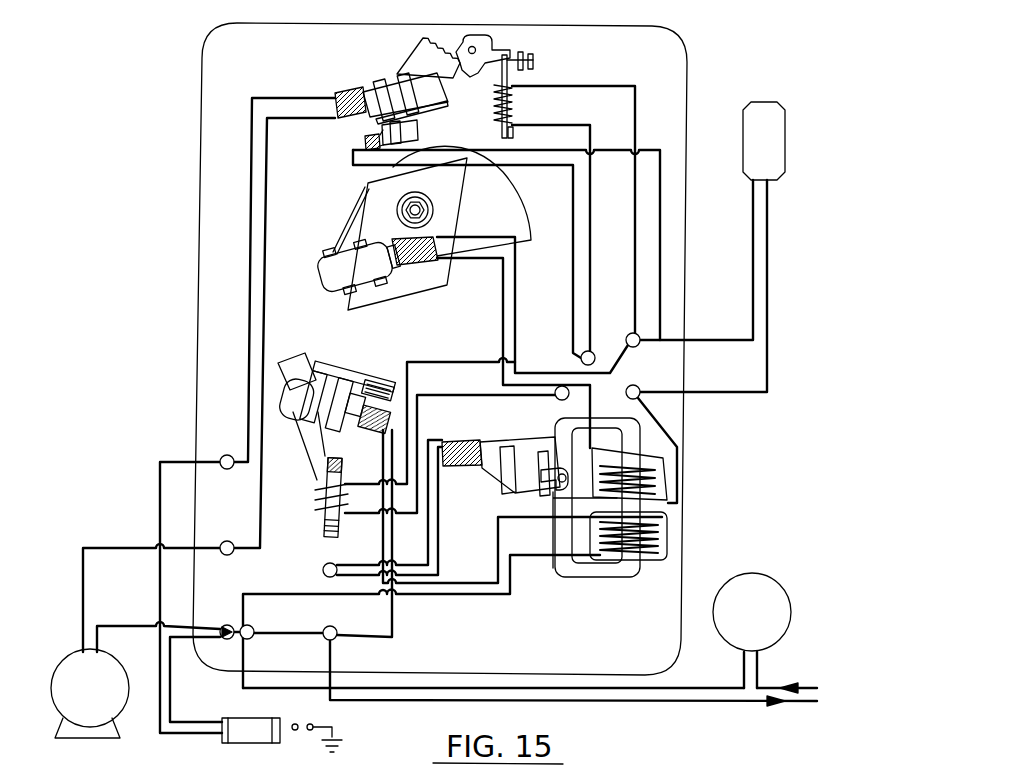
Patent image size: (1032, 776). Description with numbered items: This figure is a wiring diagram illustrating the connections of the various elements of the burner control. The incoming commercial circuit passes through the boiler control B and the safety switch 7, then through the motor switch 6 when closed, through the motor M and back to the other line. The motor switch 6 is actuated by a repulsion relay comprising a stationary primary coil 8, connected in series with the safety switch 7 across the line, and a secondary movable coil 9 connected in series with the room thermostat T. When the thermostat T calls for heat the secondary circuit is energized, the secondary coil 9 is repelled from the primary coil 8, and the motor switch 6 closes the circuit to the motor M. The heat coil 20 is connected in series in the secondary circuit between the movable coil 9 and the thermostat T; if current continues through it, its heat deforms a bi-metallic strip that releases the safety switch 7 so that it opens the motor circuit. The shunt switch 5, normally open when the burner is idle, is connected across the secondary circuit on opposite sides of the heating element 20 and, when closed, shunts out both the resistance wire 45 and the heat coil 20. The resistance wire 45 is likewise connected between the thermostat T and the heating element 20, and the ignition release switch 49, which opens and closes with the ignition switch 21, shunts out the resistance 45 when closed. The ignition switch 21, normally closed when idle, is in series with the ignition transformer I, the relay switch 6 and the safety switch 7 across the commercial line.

The ignition switch 21 is at (343, 93).
The ignition release switch 49 is at (420, 131).
The resistance wire 45 is at (510, 105).
The shunt switch 5 is at (330, 271).
The safety switch 7 is at (297, 410).
The heat coil 20 is at (313, 495).
The motor switch 6 is at (493, 466).
The secondary movable coil 9 is at (663, 477).
The stationary primary coil 8 is at (660, 530).
The room thermostat T is at (760, 140).
The boiler control B is at (752, 595).
The motor M is at (80, 680).
The ignition transformer I is at (236, 738).